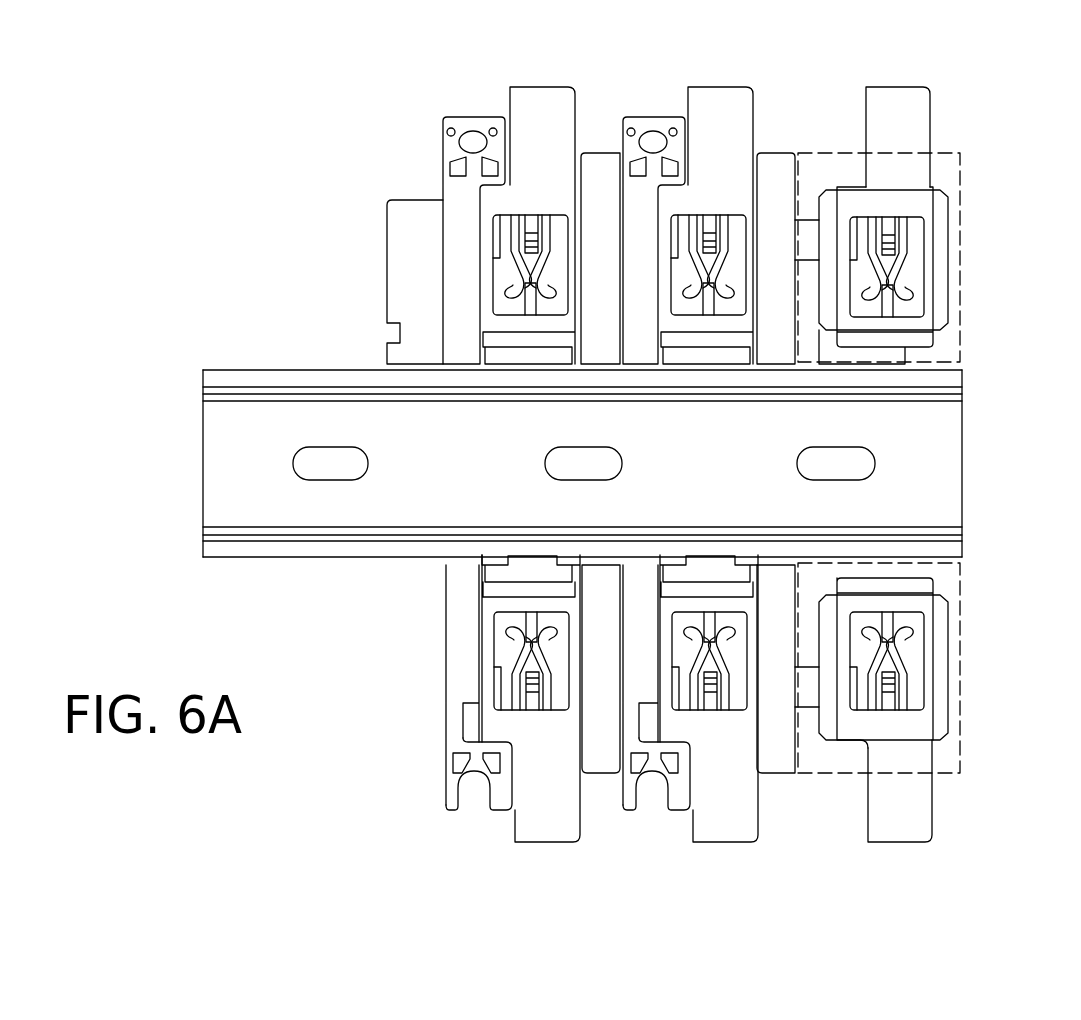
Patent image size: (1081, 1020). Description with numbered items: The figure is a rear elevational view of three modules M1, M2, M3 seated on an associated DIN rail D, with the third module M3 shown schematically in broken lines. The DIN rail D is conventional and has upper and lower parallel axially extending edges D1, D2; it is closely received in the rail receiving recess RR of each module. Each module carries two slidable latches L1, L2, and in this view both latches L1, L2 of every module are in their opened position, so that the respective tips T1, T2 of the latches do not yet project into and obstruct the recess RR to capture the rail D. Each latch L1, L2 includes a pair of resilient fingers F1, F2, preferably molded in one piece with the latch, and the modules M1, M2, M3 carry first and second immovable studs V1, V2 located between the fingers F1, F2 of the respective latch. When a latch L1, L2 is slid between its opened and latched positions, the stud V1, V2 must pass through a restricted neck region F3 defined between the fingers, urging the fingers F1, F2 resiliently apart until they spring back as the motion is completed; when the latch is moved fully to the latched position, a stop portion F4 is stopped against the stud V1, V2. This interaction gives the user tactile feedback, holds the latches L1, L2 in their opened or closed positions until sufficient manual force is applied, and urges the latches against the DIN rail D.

The DIN rail D is at (942, 470).
The upper edge of the DIN rail D1 is at (305, 368).
The lower edge of the DIN rail D2 is at (305, 558).
The module M1 is at (448, 185).
The module M2 is at (627, 183).
The module M3 is at (813, 160).
The first latch L1 is at (543, 107).
The second latch L2 is at (548, 832).
The first immovable stud V1 is at (532, 305).
The second immovable stud V2 is at (530, 615).
The rail receiving recess RR is at (638, 362).
The first tip T1 is at (905, 350).
The second tip T2 is at (905, 578).
The resilient finger F1 is at (915, 262).
The resilient finger F2 is at (872, 268).
The restricted neck region F3 is at (905, 305).
The stop portion F4 is at (893, 240).